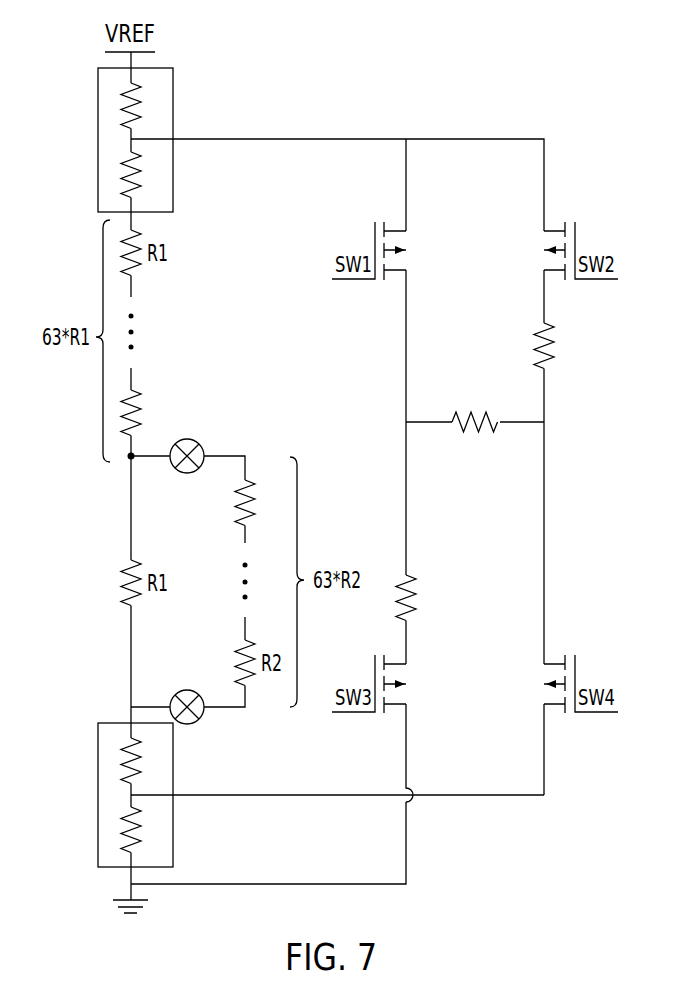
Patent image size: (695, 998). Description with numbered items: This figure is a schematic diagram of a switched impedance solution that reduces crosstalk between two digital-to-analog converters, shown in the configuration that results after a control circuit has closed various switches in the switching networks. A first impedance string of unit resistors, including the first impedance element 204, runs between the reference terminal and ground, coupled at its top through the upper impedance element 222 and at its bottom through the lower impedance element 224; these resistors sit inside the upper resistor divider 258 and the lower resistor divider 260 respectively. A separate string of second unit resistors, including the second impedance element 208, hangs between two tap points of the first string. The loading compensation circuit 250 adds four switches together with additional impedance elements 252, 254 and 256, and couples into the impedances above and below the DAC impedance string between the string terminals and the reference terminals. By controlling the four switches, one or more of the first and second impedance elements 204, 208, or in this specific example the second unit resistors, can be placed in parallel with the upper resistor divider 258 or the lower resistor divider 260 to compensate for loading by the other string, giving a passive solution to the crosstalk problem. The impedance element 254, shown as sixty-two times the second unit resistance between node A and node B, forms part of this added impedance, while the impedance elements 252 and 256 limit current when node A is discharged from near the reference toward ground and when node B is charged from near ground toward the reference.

The upper impedance element 222 is at (125, 100).
The upper resistor divider 258 is at (98, 172).
The first impedance element 204 is at (140, 393).
The second impedance element 208 is at (240, 508).
The lower resistor divider 260 is at (98, 765).
The lower impedance element 224 is at (127, 825).
The loading compensation circuit 250 is at (516, 87).
The impedance element 256 is at (540, 340).
The impedance element 254 is at (461, 431).
The impedance element 252 is at (410, 578).